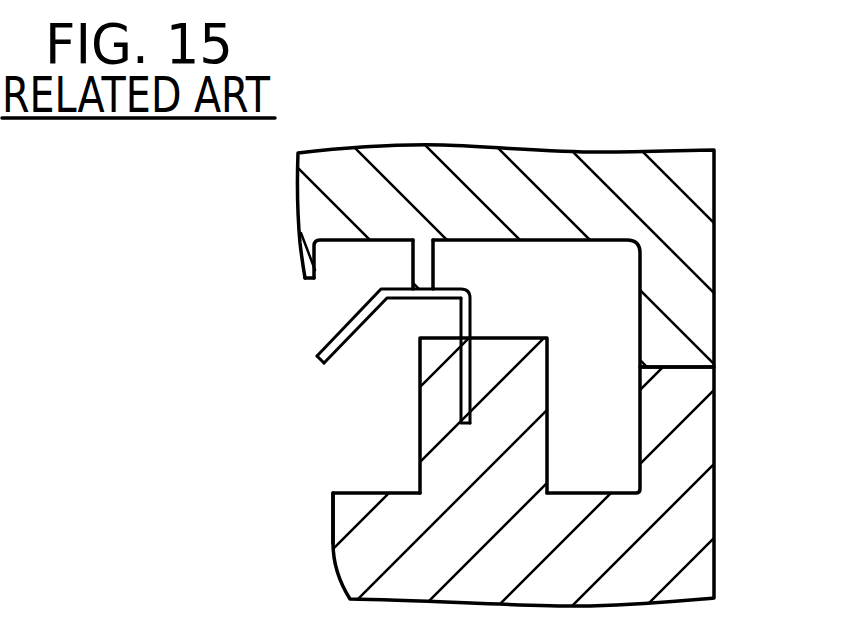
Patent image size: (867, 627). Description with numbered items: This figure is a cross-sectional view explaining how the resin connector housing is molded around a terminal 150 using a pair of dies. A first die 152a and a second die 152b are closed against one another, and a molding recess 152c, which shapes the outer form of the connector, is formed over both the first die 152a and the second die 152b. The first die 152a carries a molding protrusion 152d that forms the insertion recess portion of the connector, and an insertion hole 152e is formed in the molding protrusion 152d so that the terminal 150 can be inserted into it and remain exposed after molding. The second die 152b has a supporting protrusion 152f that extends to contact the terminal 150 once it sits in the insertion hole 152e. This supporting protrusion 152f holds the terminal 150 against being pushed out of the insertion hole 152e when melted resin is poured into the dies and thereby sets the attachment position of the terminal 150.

The terminal 150 is at (469, 318).
The first die 152a is at (705, 437).
The second die 152b is at (707, 252).
The molding recess 152c is at (316, 278).
The molding protrusion 152d is at (537, 383).
The insertion hole 152e is at (460, 388).
The supporting protrusion 152f is at (423, 263).